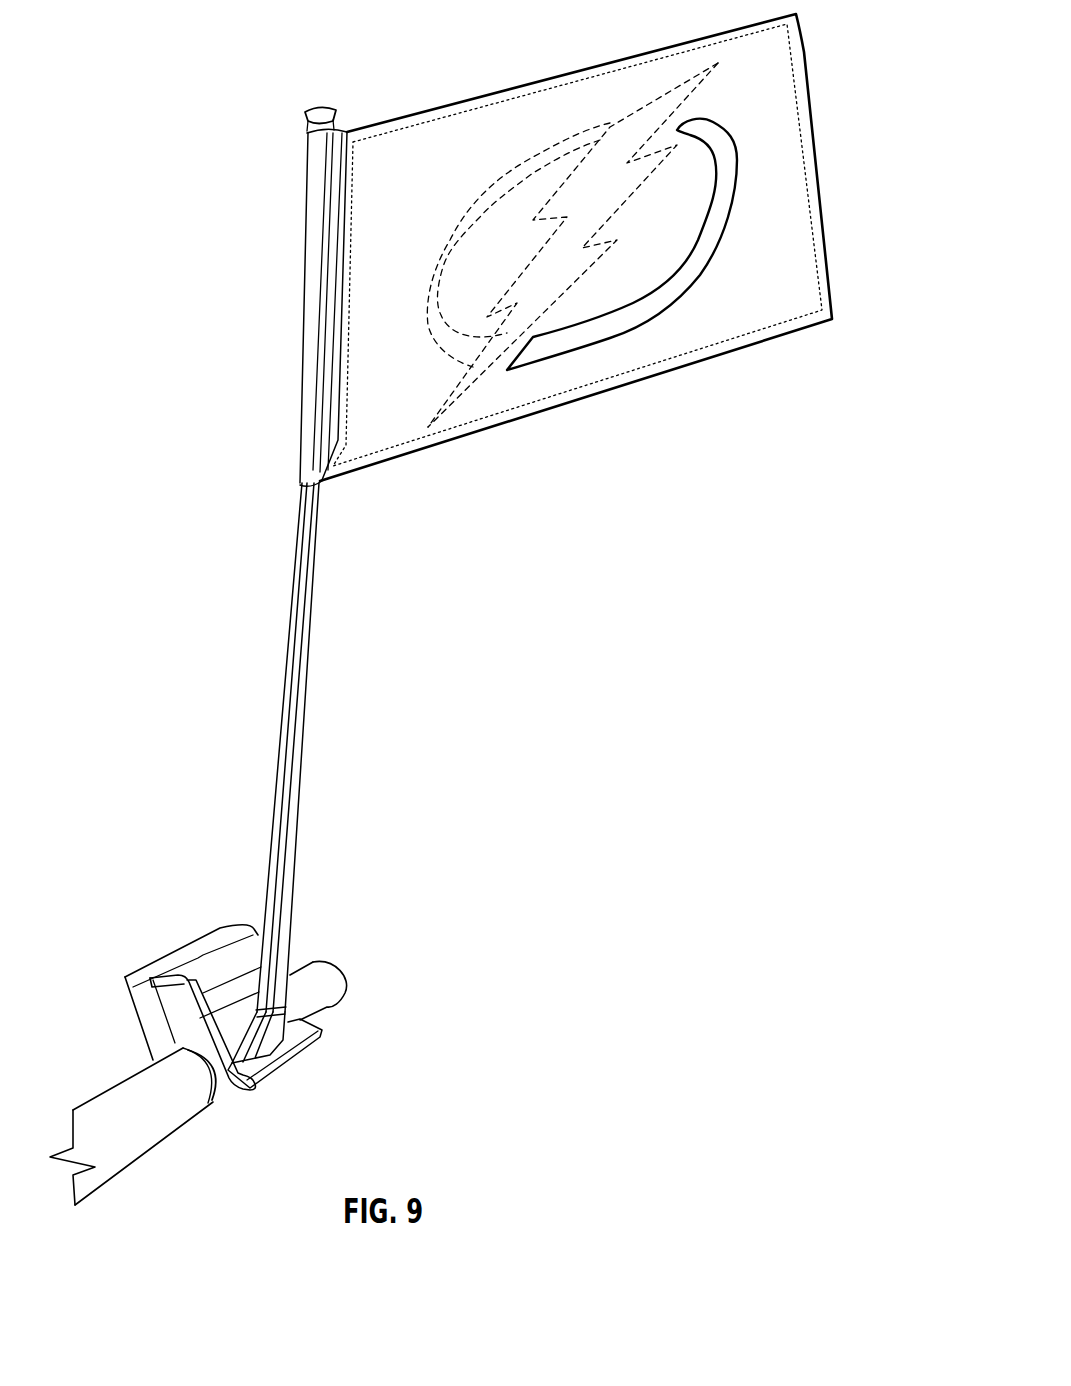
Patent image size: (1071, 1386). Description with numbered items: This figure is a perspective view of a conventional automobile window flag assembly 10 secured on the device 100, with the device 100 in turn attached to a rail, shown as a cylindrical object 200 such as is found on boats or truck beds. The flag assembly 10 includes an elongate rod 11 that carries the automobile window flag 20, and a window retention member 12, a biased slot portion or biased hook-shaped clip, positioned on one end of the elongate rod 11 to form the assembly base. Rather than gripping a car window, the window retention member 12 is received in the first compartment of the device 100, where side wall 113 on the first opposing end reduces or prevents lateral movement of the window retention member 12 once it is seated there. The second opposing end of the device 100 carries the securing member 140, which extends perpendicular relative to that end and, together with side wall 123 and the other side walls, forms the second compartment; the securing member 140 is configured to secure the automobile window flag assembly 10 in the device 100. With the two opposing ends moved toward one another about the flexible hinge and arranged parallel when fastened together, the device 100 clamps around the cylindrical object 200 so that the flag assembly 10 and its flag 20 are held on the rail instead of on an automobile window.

The automobile window flag assembly 10 is at (240, 162).
The elongate rod 11 is at (292, 780).
The automobile window flag 20 is at (560, 383).
The device 100 is at (111, 861).
The securing member 140 is at (210, 943).
The window retention member 12 is at (175, 980).
The side wall 123 is at (145, 1017).
The side wall 113 is at (175, 1017).
The cylindrical object 200 is at (108, 1130).